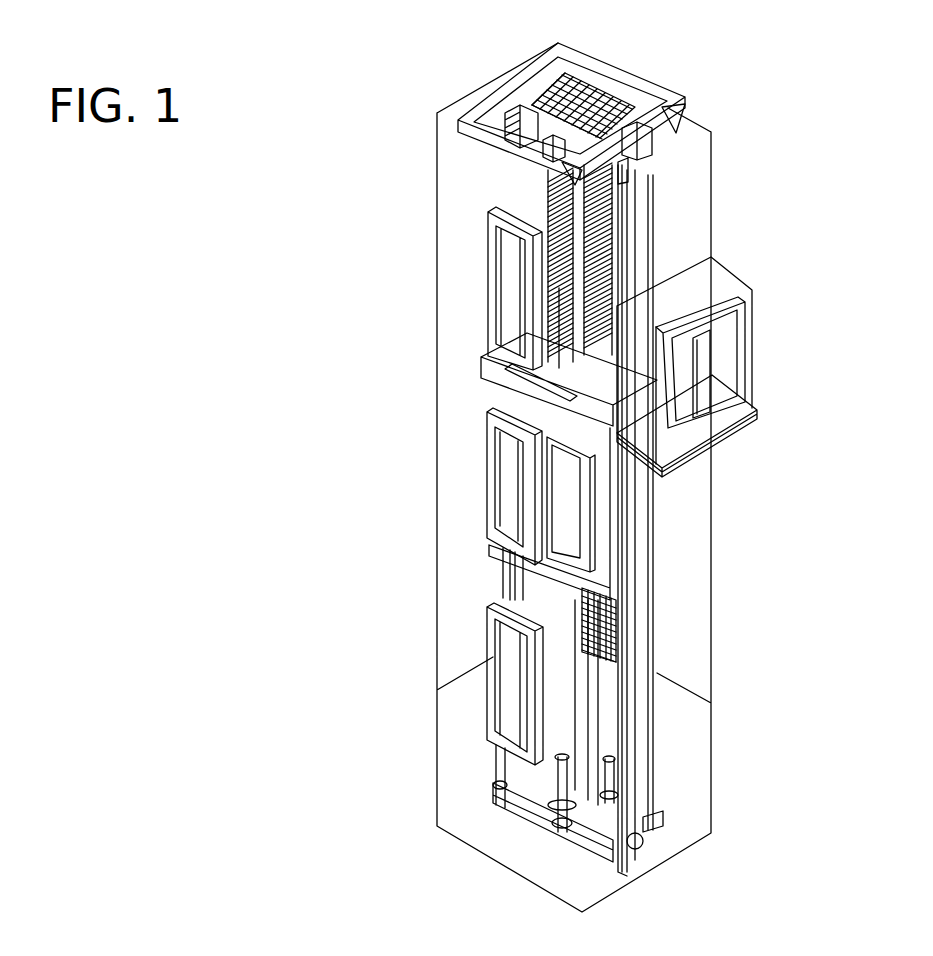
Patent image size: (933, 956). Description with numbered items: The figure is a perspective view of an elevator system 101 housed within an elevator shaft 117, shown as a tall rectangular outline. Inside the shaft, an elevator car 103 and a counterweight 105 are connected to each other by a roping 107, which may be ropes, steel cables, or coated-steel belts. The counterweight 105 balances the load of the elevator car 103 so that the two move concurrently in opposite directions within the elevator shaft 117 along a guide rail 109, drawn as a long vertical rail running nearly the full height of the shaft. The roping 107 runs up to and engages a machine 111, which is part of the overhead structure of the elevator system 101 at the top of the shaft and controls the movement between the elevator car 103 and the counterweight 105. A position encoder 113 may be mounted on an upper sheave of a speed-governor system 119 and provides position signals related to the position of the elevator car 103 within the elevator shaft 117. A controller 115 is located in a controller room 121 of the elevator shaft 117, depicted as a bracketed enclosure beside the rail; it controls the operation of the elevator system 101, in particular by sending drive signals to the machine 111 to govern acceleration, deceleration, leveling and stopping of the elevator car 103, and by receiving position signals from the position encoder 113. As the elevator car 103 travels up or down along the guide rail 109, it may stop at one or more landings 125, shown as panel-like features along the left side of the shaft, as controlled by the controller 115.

The elevator system 101 is at (743, 63).
The elevator car 103 is at (567, 508).
The counterweight 105 is at (600, 637).
The roping 107 is at (577, 287).
The guide rail 109 is at (640, 583).
The machine 111 is at (508, 110).
The position encoder 113 is at (652, 168).
The controller 115 is at (708, 372).
The elevator shaft 117 is at (488, 594).
The speed-governor system 119 is at (645, 199).
The controller room 121 is at (757, 275).
The landings 125 is at (488, 278).